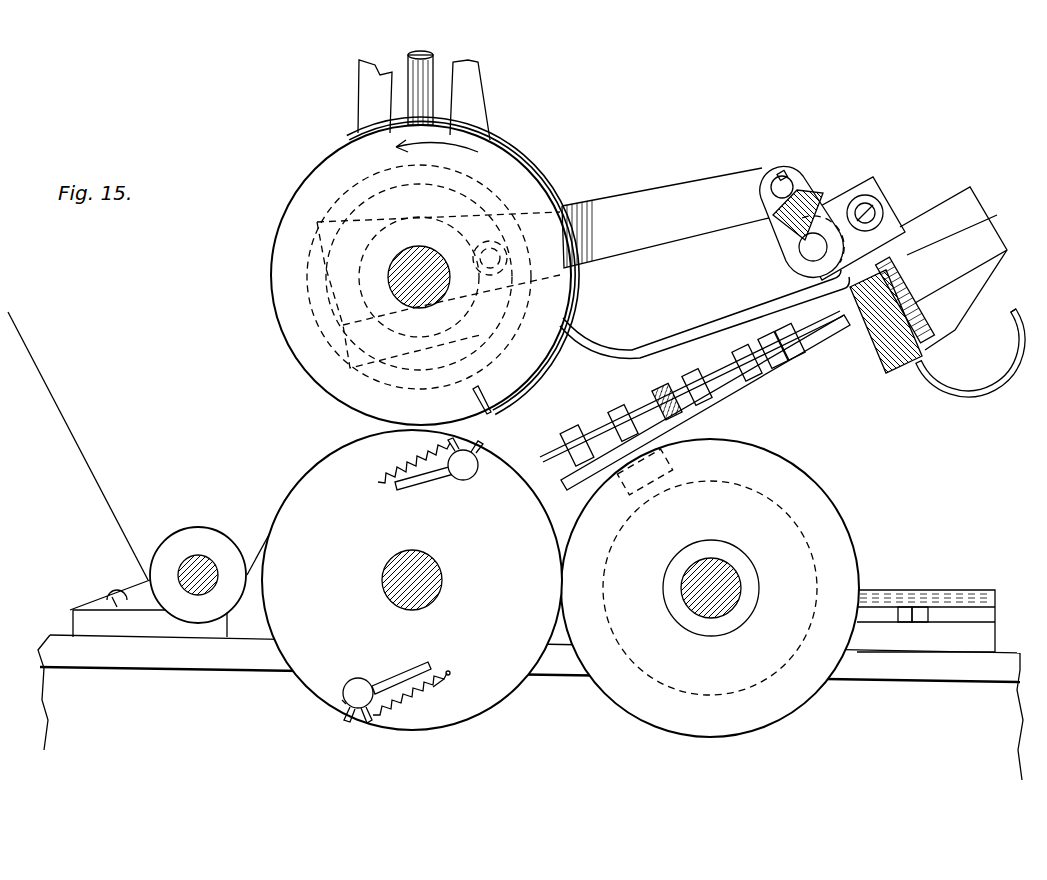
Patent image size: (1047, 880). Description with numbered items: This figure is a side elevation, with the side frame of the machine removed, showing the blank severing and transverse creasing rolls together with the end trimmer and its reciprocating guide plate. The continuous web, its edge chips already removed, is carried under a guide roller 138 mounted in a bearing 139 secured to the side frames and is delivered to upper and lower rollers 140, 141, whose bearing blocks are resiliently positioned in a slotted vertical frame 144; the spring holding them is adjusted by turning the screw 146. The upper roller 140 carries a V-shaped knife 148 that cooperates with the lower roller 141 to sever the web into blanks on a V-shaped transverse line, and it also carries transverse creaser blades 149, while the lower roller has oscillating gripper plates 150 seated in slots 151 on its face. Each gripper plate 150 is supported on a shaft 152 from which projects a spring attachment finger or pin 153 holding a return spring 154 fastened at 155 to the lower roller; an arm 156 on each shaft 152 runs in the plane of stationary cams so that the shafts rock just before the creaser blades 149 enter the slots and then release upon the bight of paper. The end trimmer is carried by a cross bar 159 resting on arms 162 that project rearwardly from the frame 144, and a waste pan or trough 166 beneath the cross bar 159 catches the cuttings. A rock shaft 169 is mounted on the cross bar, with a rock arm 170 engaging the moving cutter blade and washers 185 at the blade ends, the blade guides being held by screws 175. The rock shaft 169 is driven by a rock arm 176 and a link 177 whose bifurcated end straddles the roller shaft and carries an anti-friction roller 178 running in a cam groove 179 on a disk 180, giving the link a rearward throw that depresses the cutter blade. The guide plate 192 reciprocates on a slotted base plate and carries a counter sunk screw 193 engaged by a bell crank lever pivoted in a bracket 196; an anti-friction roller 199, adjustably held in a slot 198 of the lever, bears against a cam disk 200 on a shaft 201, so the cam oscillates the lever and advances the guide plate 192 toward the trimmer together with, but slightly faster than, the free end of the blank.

The guide roller 138 is at (188, 537).
The bearing 139 is at (143, 600).
The upper roller 140 is at (507, 177).
The lower roller 141 is at (322, 475).
The slotted vertical frame 144 is at (472, 92).
The screw 146 is at (430, 82).
The V-shaped knife 148 is at (363, 112).
The transverse creaser blades 149 is at (345, 140).
The oscillating gripper plates 150 is at (468, 452).
The slots 151 is at (340, 703).
The shaft 152 is at (463, 481).
The spring attachment finger or pin 153 is at (380, 712).
The return spring 154 is at (435, 687).
The fastening point 155 is at (449, 672).
The arm 156 is at (422, 485).
The cross bar 159 is at (890, 352).
The arms 162 is at (957, 205).
The waste pan or trough 166 is at (988, 387).
The rock shaft 169 is at (800, 249).
The rock arm 170 is at (862, 198).
The screws 175 is at (1011, 312).
The rock arm 176 is at (817, 197).
The link 177 is at (697, 192).
The anti-friction roller 178 is at (497, 245).
The cam groove 179 is at (398, 195).
The disk 180 is at (313, 286).
The washer 185 is at (872, 211).
The guide plate 192 is at (612, 447).
The counter sunk screw 193 is at (692, 388).
The bracket 196 is at (823, 332).
The slot 198 is at (648, 430).
The anti-friction roller 199 is at (617, 478).
The cam disk 200 is at (817, 510).
The shaft 201 is at (742, 584).